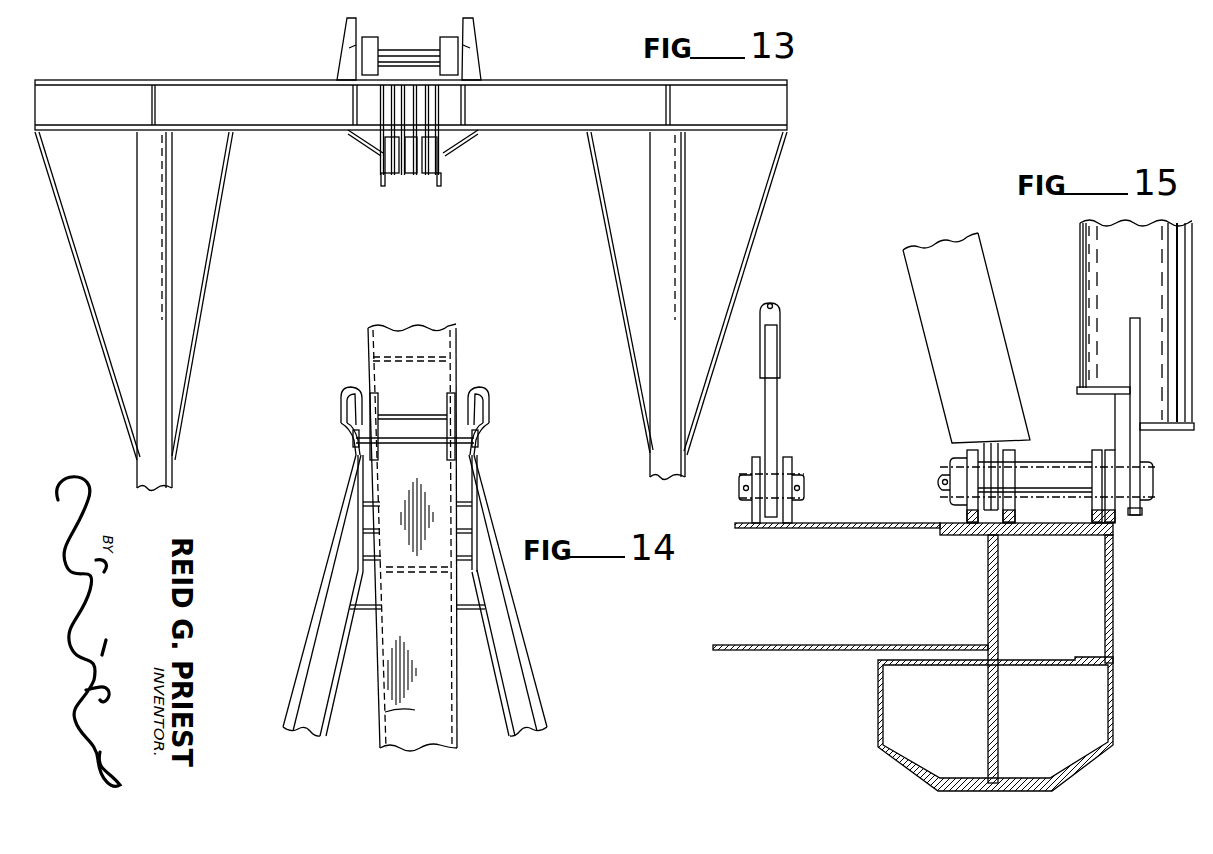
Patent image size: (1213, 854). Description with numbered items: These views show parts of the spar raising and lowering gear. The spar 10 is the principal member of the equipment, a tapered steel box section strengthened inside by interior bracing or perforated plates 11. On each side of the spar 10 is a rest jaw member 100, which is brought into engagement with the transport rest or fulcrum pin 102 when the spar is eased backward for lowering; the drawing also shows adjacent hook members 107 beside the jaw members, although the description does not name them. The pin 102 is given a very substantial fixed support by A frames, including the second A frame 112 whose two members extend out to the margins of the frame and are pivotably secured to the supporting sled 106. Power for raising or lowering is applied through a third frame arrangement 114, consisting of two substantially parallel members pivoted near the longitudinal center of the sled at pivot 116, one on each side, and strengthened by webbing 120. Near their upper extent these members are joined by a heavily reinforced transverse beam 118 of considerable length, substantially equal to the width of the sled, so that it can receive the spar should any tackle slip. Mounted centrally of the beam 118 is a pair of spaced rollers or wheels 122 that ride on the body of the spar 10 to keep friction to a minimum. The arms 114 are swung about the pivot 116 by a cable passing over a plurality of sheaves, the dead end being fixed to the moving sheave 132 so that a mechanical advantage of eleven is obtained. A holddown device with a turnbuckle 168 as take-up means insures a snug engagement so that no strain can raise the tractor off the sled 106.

In FIG. 14, the spar 10 is at (458, 710).
In FIG. 14, the interior bracing or perforated plates 11 is at (420, 357).
In FIG. 14, the rest jaw member 100 is at (372, 400).
In FIG. 14, the transport rest or fulcrum pin 102 is at (478, 440).
In FIG. 15, the supporting sled 106 is at (1112, 710).
In FIG. 14, the hooks 107 is at (358, 420).
In FIG. 15, the second A frame 112 is at (933, 340).
In FIG. 13, the third frame arrangement 114 is at (165, 482).
In FIG. 15, the third frame arrangement 114 is at (1088, 255).
In FIG. 15, the pivot 116 is at (1151, 485).
In FIG. 13, the transverse beam 118 is at (558, 90).
In FIG. 13, the webbing 120 is at (110, 226).
In FIG. 13, the spaced rollers or wheels 122 is at (447, 40).
In FIG. 13, the moving sheave 132 is at (433, 178).
In FIG. 15, the turnbuckle 168 is at (780, 348).